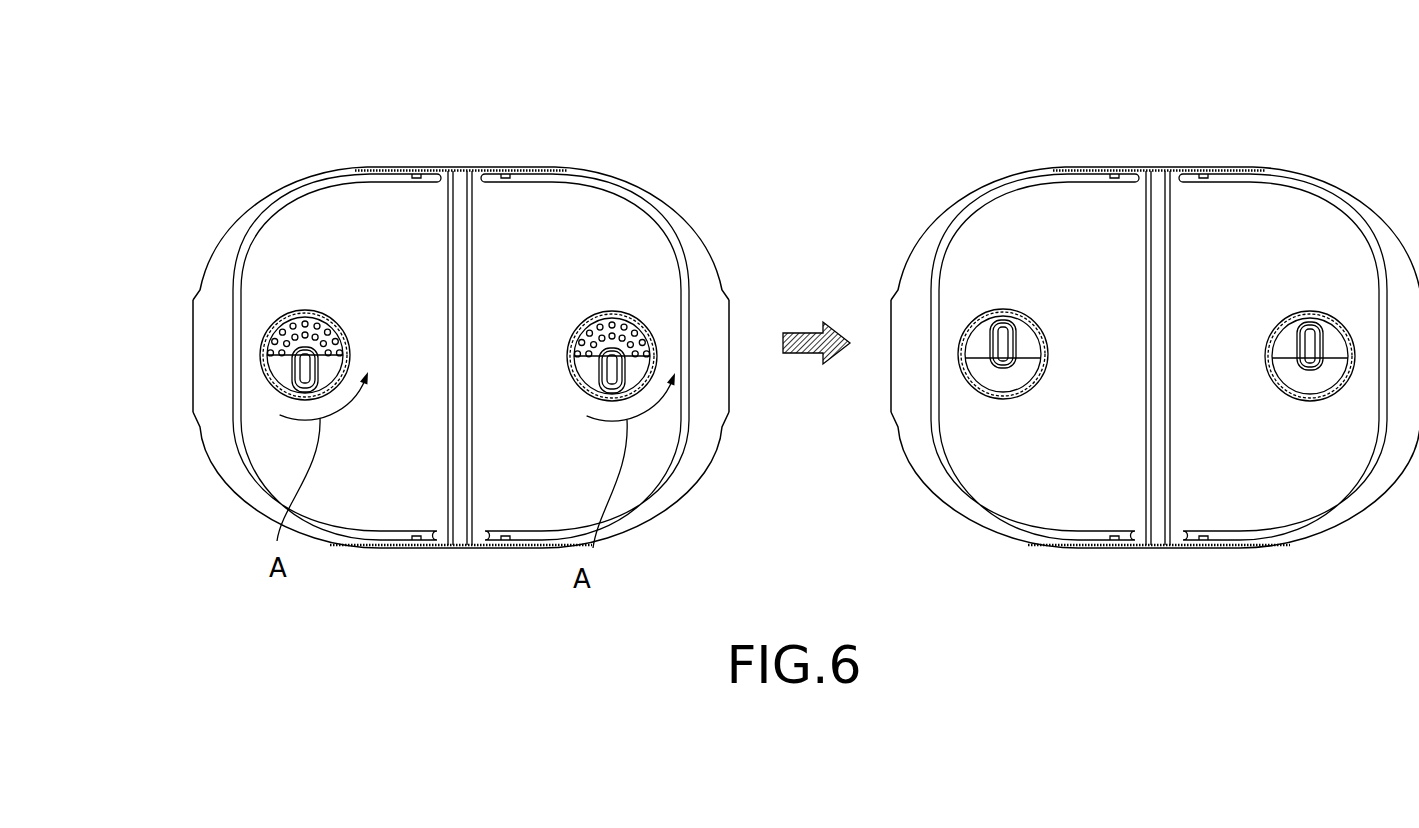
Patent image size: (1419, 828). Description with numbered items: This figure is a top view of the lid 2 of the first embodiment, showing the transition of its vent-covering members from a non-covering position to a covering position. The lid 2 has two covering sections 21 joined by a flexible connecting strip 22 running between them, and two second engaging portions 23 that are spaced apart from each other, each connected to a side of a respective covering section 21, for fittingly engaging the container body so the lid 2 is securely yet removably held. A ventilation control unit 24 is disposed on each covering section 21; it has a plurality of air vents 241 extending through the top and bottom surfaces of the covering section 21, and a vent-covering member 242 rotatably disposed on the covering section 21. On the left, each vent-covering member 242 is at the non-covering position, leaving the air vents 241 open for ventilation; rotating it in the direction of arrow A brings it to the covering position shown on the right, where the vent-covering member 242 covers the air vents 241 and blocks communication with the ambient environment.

The lid 2 is at (523, 150).
The covering section 21 is at (337, 217).
The flexible connecting strip 22 is at (465, 172).
The second engaging portion 23 is at (193, 342).
The ventilation control unit 24 is at (283, 303).
The air vents 241 is at (343, 353).
The vent-covering member 242 is at (285, 378).